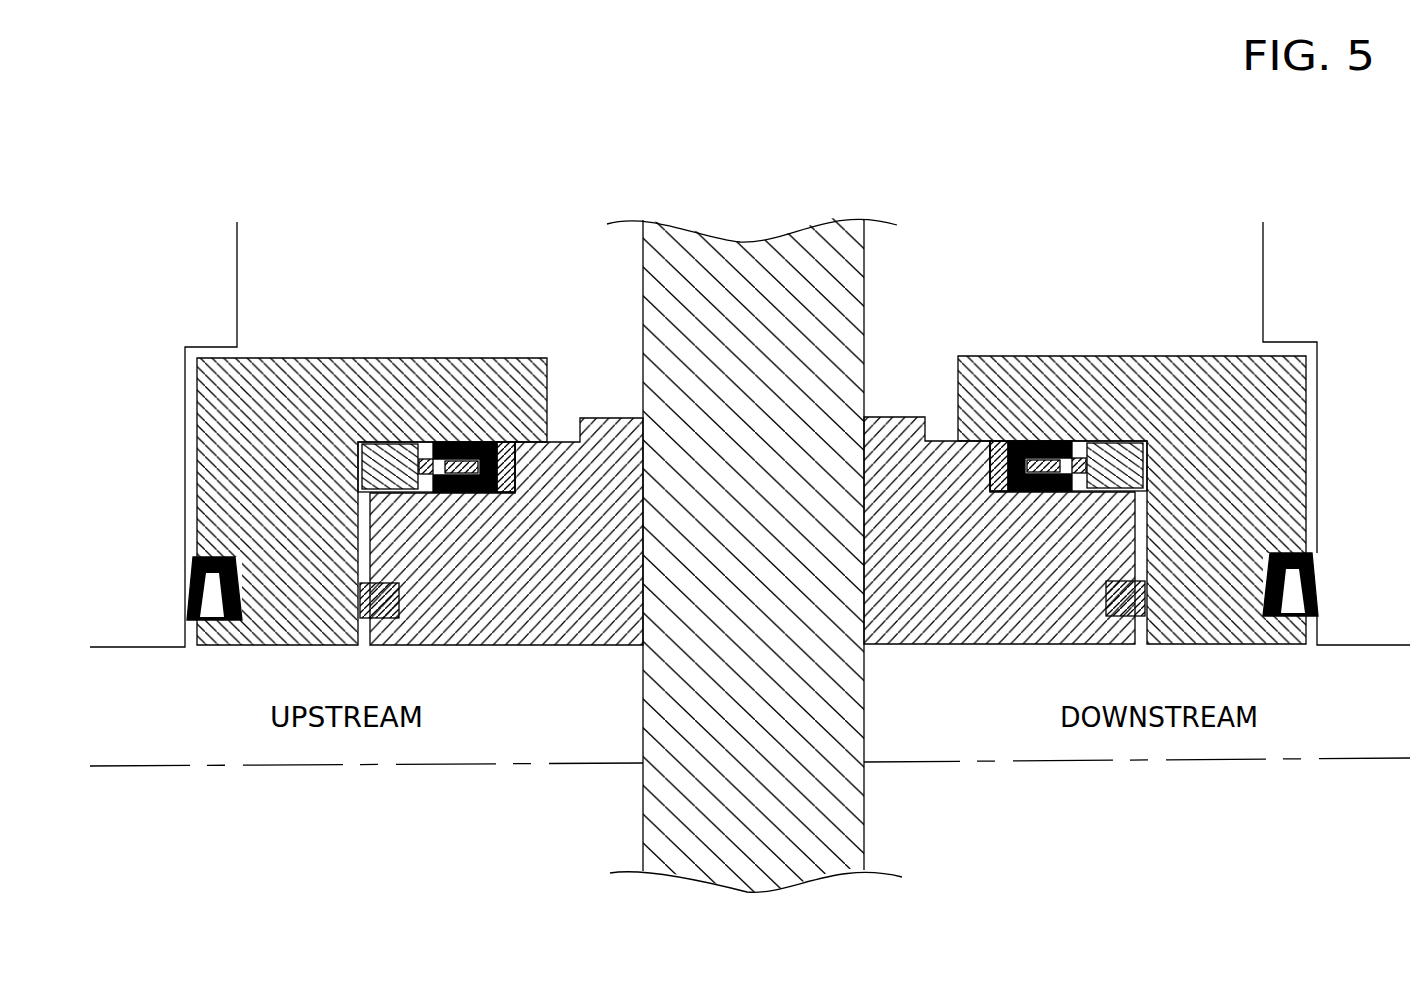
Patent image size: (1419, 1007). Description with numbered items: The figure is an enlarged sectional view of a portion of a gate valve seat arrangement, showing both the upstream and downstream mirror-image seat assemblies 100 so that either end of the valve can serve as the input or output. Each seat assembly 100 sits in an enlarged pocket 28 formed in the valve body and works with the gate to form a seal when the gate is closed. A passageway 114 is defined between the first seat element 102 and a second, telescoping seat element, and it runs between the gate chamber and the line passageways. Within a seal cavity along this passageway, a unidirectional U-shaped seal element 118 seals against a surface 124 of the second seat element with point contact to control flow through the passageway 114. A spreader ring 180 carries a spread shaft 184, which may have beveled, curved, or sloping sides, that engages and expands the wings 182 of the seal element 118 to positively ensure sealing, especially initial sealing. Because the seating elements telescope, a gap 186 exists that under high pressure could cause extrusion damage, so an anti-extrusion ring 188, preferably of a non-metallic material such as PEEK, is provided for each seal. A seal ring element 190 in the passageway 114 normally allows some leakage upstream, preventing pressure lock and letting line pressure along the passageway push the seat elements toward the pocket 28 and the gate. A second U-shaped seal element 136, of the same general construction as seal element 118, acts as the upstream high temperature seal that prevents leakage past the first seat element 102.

The pocket 28 is at (183, 373).
The seat assembly 100 is at (442, 202).
The first seat element 102 is at (217, 475).
The passageway 114 is at (365, 645).
The seal element 118 is at (460, 442).
The surface 124 is at (817, 685).
The seal element 136 is at (193, 573).
The spreader ring 180 is at (403, 442).
The wings 182 is at (490, 443).
The spread shaft 184 is at (397, 437).
The gap 186 is at (505, 444).
The anti-extrusion ring 188 is at (575, 447).
The seal ring element 190 is at (400, 605).